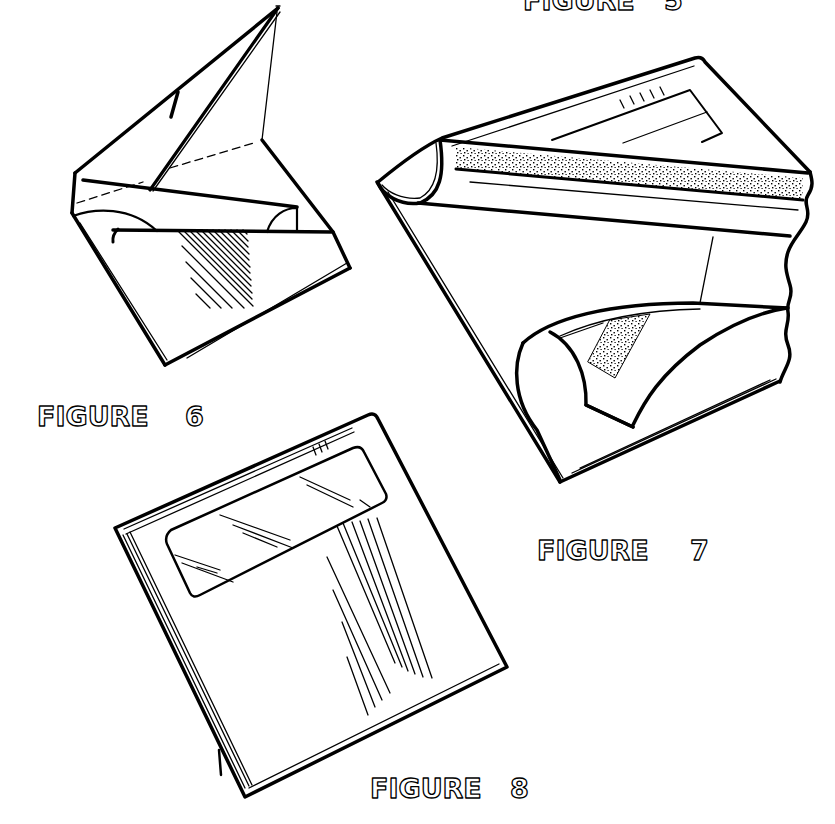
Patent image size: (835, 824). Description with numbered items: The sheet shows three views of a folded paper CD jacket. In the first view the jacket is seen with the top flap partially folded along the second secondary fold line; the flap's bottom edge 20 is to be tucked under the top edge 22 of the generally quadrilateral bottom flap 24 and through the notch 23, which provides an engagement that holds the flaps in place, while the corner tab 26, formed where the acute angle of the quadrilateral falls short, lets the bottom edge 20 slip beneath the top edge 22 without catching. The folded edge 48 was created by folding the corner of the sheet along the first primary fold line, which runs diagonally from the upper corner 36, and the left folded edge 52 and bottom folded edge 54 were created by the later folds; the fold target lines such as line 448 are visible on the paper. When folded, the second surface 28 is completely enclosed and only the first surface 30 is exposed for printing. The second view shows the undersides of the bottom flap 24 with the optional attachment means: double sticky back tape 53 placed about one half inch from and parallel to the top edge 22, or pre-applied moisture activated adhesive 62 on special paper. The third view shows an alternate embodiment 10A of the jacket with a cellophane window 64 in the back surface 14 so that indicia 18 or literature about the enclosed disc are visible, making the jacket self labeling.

In FIG. 8, the storage container 10A is at (158, 672).
In FIG. 8, the back surface 14 is at (275, 652).
In FIG. 7, the indicia 18 is at (703, 127).
In FIG. 6, the bottom edge 20 is at (122, 135).
In FIG. 7, the bottom edge 20 is at (455, 136).
In FIG. 6, the top edge 22 is at (297, 207).
In FIG. 7, the top edge 22 is at (700, 338).
In FIG. 6, the notch 23 is at (177, 94).
In FIG. 6, the bottom flap 24 is at (281, 288).
In FIG. 7, the bottom flap 24 is at (652, 391).
In FIG. 6, the corner tab 26 is at (117, 229).
In FIG. 7, the corner tab 26 is at (632, 410).
In FIG. 6, the second surface 28 is at (117, 163).
In FIG. 6, the first surface 30 is at (253, 75).
In FIG. 6, the upper corner 36 is at (280, 9).
In FIG. 6, the folded edge 48 is at (293, 183).
In FIG. 6, the tab 448 is at (235, 147).
In FIG. 6, the left folded edge 52 is at (111, 275).
In FIG. 7, the left folded edge 52 is at (489, 367).
In FIG. 7, the double sticky back tape 53 is at (631, 316).
In FIG. 6, the bottom folded edge 54 is at (218, 340).
In FIG. 7, the bottom folded edge 54 is at (765, 387).
In FIG. 7, the moisture activated adhesive 62 is at (493, 166).
In FIG. 8, the cellophane window 64 is at (192, 532).